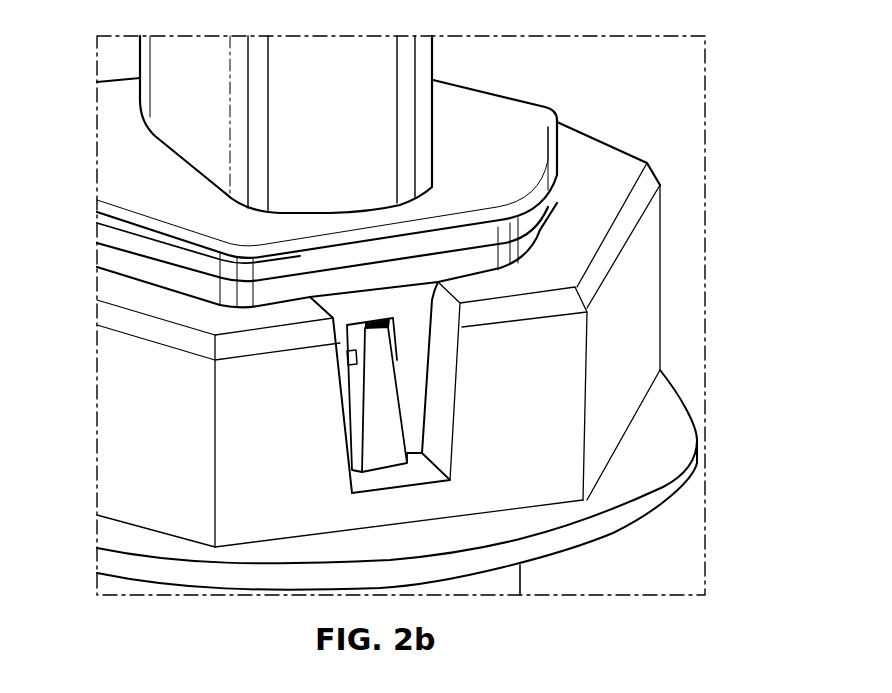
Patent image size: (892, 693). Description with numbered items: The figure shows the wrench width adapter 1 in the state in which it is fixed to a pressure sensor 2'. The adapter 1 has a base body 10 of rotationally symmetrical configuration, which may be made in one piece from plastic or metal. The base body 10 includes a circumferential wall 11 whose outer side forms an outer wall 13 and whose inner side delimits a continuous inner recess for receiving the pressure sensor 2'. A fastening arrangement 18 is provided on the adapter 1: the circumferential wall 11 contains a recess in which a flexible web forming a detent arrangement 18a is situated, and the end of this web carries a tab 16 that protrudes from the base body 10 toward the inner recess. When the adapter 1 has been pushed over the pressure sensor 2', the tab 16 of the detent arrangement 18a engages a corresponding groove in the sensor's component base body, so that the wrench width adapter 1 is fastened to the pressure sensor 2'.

The wrench width adapter 1 is at (734, 145).
The pressure sensor 2' is at (292, 190).
The base body 10 is at (435, 334).
The circumferential wall 11 is at (449, 356).
The outer wall 13 is at (625, 340).
The tab 16 is at (353, 349).
The fastening arrangement 18 is at (459, 395).
The detent arrangement 18a is at (377, 323).